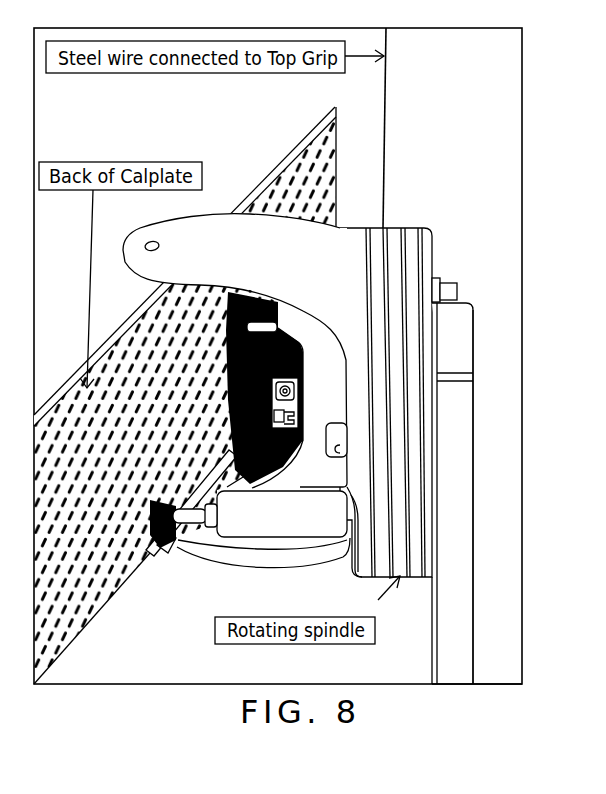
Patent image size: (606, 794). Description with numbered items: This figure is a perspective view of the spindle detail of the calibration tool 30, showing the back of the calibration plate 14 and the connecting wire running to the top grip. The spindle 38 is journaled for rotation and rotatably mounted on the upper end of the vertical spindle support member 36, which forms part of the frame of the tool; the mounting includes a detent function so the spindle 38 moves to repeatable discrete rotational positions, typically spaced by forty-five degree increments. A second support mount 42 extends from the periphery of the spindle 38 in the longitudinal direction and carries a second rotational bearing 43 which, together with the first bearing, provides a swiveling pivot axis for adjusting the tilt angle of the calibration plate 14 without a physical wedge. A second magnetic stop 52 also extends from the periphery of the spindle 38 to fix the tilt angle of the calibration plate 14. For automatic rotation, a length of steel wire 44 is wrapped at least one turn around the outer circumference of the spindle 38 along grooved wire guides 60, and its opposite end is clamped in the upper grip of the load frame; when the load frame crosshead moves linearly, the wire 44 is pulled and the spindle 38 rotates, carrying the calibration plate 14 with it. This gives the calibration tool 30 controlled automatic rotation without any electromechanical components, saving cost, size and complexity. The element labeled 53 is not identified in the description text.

The calibration plate 14 is at (290, 147).
The calibration tool 30 is at (475, 600).
The vertical spindle support member 36 is at (456, 435).
The spindle 38 is at (466, 260).
The second support mount 42 is at (283, 262).
The second rotational bearing 43 is at (148, 245).
The wire 44 is at (388, 148).
The second magnetic stop 52 is at (288, 529).
The pin 53 is at (182, 524).
The grooved wire guides 60 is at (413, 228).